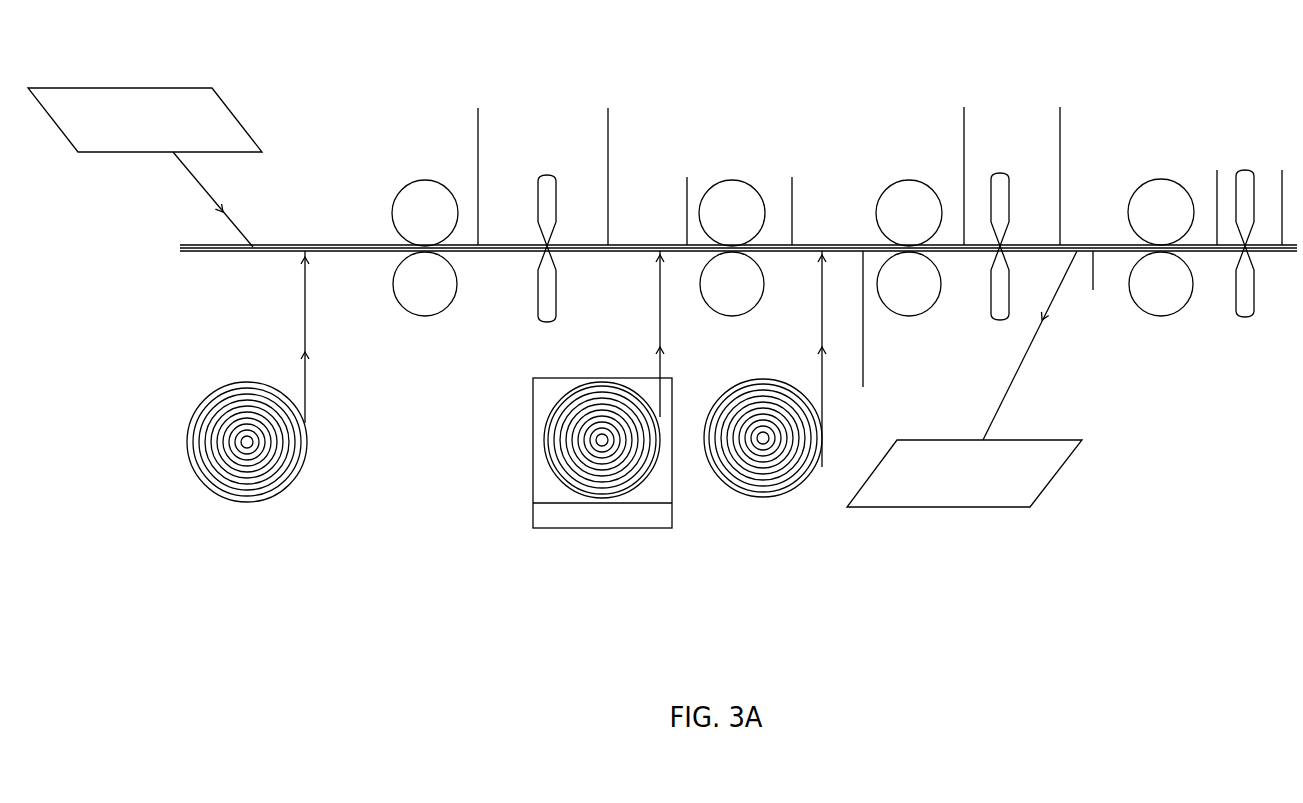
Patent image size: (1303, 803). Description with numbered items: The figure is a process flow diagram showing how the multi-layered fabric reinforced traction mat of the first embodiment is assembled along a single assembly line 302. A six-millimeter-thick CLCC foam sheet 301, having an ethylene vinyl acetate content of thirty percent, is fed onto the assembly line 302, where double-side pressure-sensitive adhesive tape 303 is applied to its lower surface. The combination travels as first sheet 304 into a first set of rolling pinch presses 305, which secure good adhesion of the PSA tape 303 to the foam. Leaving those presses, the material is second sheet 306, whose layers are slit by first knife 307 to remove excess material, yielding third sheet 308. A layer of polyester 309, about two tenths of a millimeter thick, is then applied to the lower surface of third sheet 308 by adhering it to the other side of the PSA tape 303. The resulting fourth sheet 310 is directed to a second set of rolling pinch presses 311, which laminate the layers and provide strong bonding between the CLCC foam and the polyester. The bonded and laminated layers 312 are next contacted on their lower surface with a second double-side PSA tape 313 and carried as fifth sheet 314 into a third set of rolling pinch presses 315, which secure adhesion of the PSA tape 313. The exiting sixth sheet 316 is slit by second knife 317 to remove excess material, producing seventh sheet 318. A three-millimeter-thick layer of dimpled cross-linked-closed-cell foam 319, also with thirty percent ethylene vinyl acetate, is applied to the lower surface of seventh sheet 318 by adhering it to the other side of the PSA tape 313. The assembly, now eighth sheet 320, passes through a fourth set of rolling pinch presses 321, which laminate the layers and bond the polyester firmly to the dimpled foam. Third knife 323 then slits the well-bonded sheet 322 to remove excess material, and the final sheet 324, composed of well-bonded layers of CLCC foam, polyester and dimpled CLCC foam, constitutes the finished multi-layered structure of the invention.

The CLCC foam sheet 301 is at (130, 88).
The assembly line 302 is at (186, 247).
The double-side pressure-sensitive adhesive tape 303 is at (247, 502).
The first sheet 304 is at (375, 255).
The first set of rolling pinch presses 305 is at (425, 316).
The second sheet 306 is at (481, 166).
The first knife 307 is at (547, 173).
The third sheet 308 is at (612, 166).
The layer of polyester 309 is at (533, 475).
The fourth sheet 310 is at (690, 201).
The second set of rolling pinch presses 311 is at (732, 180).
The bonded and laminated layers 312 is at (794, 201).
The double-side PSA tape 313 is at (763, 497).
The fifth sheet 314 is at (865, 333).
The third set of rolling pinch presses 315 is at (909, 180).
The sixth sheet 316 is at (966, 166).
The second knife 317 is at (1000, 171).
The seventh sheet 318 is at (1063, 166).
The layer of dimpled cross-linked-closed-cell foam 319 is at (1047, 472).
The eighth sheet 320 is at (1097, 282).
The fourth set of rolling pinch presses 321 is at (1161, 179).
The well-bonded sheet 322 is at (1219, 197).
The third knife 323 is at (1245, 168).
The final sheet 324 is at (1284, 197).